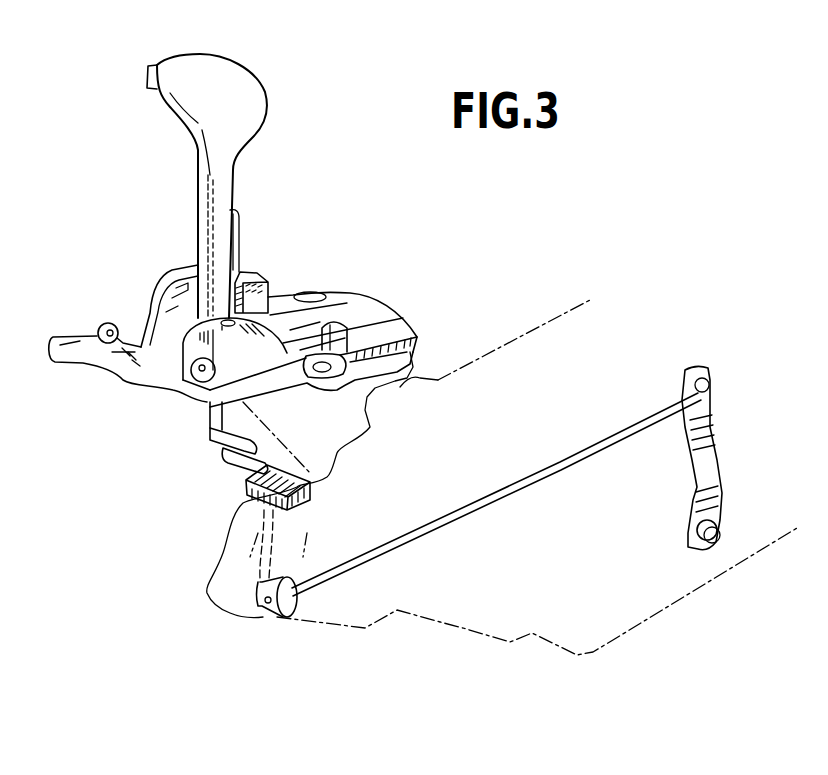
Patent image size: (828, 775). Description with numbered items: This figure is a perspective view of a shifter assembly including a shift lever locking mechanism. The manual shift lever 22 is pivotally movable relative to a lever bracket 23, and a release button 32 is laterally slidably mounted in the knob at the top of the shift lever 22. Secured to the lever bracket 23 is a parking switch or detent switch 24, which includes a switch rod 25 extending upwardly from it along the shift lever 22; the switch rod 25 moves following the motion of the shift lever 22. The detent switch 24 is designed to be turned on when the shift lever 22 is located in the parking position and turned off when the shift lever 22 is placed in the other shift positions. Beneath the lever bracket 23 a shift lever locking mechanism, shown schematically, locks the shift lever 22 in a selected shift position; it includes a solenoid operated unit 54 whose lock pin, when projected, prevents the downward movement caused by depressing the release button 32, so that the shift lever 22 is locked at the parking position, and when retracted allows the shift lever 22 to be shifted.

The manual shift lever 22 is at (229, 80).
The release button 32 is at (147, 78).
The switch rod 25 is at (237, 222).
The detent switch 24 is at (272, 285).
The lever bracket 23 is at (327, 293).
The solenoid operated unit 54 is at (253, 503).